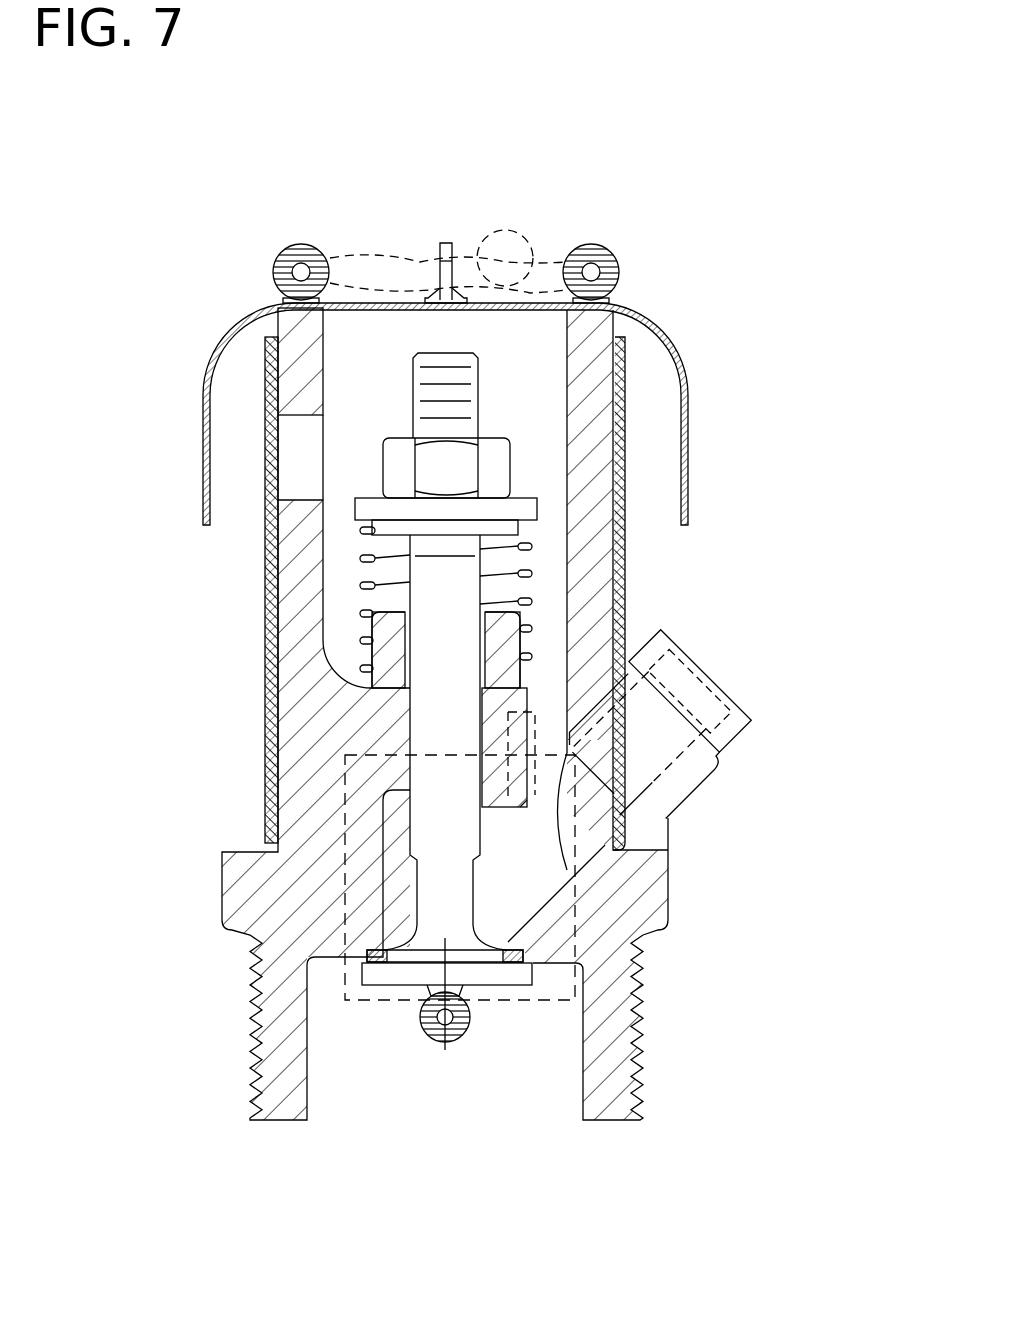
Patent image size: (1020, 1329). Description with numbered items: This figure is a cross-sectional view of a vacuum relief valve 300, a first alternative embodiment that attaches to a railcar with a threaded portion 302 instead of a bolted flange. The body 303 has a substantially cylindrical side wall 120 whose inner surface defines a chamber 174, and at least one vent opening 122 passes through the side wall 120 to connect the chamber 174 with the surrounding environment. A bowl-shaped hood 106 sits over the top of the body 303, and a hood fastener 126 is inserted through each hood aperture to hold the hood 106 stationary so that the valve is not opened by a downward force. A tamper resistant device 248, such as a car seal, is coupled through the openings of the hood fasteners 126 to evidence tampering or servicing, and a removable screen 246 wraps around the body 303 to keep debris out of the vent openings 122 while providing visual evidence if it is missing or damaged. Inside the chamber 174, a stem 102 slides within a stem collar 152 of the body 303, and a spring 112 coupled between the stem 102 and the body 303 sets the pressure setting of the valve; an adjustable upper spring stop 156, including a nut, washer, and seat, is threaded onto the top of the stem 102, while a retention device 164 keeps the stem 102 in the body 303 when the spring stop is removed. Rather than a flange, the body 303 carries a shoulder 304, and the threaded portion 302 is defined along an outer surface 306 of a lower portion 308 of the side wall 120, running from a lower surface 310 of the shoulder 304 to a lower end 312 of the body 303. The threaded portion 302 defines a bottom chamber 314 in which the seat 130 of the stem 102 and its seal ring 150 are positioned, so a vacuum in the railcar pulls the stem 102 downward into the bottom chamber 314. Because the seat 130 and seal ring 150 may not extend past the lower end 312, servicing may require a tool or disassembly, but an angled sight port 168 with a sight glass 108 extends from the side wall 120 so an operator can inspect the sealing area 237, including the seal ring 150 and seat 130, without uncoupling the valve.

The vacuum relief valve 300 is at (688, 148).
The hood 106 is at (665, 330).
The hood fastener 126 is at (594, 250).
The tamper resistant device 248 is at (362, 255).
The chamber 174 is at (402, 366).
The vent opening 122 is at (300, 455).
The screen 246 is at (626, 478).
The side wall 120 is at (598, 572).
The body 303 is at (302, 565).
The threaded portion 302 is at (485, 766).
The shoulder 304 is at (660, 882).
The outer surface 306 is at (642, 1016).
The lower surface 310 is at (238, 935).
The lower end 312 is at (278, 1122).
The lower portion 308 is at (655, 1108).
The sealing area 237 is at (345, 985).
The bottom chamber 314 is at (524, 1102).
The upper spring stop 156 is at (513, 452).
The retention device 164 is at (402, 595).
The spring 112 is at (370, 556).
The stem 102 is at (420, 720).
The seal ring 150 is at (527, 958).
The seat 130 is at (382, 983).
The sight glass 108 is at (735, 735).
The sight port 168 is at (700, 787).
The stem collar 152 is at (520, 692).